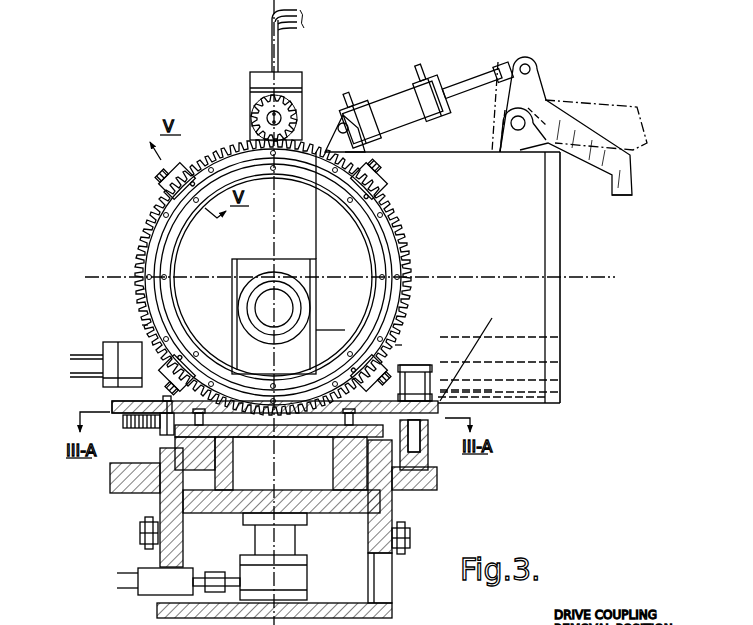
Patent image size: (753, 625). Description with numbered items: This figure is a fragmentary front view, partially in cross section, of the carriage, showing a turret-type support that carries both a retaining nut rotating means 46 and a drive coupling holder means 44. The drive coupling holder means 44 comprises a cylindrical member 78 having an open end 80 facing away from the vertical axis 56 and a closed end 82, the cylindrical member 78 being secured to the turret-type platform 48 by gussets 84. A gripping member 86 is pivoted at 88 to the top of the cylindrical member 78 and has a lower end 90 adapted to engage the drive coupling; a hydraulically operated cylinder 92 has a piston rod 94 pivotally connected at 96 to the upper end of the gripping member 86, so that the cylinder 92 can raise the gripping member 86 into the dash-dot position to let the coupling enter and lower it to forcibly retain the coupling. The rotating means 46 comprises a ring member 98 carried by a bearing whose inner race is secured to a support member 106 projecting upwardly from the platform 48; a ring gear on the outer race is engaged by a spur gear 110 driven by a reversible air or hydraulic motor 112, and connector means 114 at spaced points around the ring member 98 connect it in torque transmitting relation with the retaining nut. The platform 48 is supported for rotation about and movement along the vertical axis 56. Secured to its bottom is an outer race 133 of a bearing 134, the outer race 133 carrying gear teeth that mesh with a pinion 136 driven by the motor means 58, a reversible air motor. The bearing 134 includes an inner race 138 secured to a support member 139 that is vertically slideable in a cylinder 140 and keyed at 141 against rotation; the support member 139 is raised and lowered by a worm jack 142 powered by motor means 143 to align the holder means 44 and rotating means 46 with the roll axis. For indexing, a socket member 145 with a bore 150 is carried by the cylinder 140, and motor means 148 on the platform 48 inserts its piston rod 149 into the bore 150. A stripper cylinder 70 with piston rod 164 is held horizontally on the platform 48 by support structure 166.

The drive coupling holder means 44 is at (563, 250).
The retaining nut rotating means 46 is at (142, 226).
The turret-type platform 48 is at (440, 407).
The vertical axis 56 is at (270, 20).
The motor means 58 is at (120, 340).
The stripper cylinder 70 is at (308, 287).
The cylindrical member 78 is at (546, 338).
The open end 80 is at (562, 300).
The closed end 82 is at (316, 235).
The gussets 84 is at (466, 330).
The gripping member 86 is at (620, 105).
The pivot 88 is at (510, 124).
The lower end 90 is at (612, 195).
The hydraulically operated cylinder 92 is at (414, 96).
The piston rod 94 is at (478, 82).
The pivotal connection 96 is at (531, 66).
The ring member 98 is at (410, 248).
The support member 106 is at (141, 323).
The spur gear 110 is at (292, 110).
The reversible air or hydraulic motor 112 is at (248, 98).
The connector means 114 is at (160, 184).
The outer race 133 is at (160, 426).
The bearing 134 is at (165, 438).
The pinion 136 is at (120, 403).
The inner race 138 is at (205, 424).
The support member 139 is at (212, 470).
The cylinder 140 is at (392, 512).
The key 141 is at (183, 505).
The worm jack 142 is at (306, 563).
The motor means 143 is at (185, 568).
The socket member 145 is at (437, 465).
The motor means 148 is at (438, 372).
The piston rod 149 is at (448, 397).
The bore 150 is at (428, 434).
The piston rod 164 is at (290, 308).
The support structure 166 is at (234, 258).